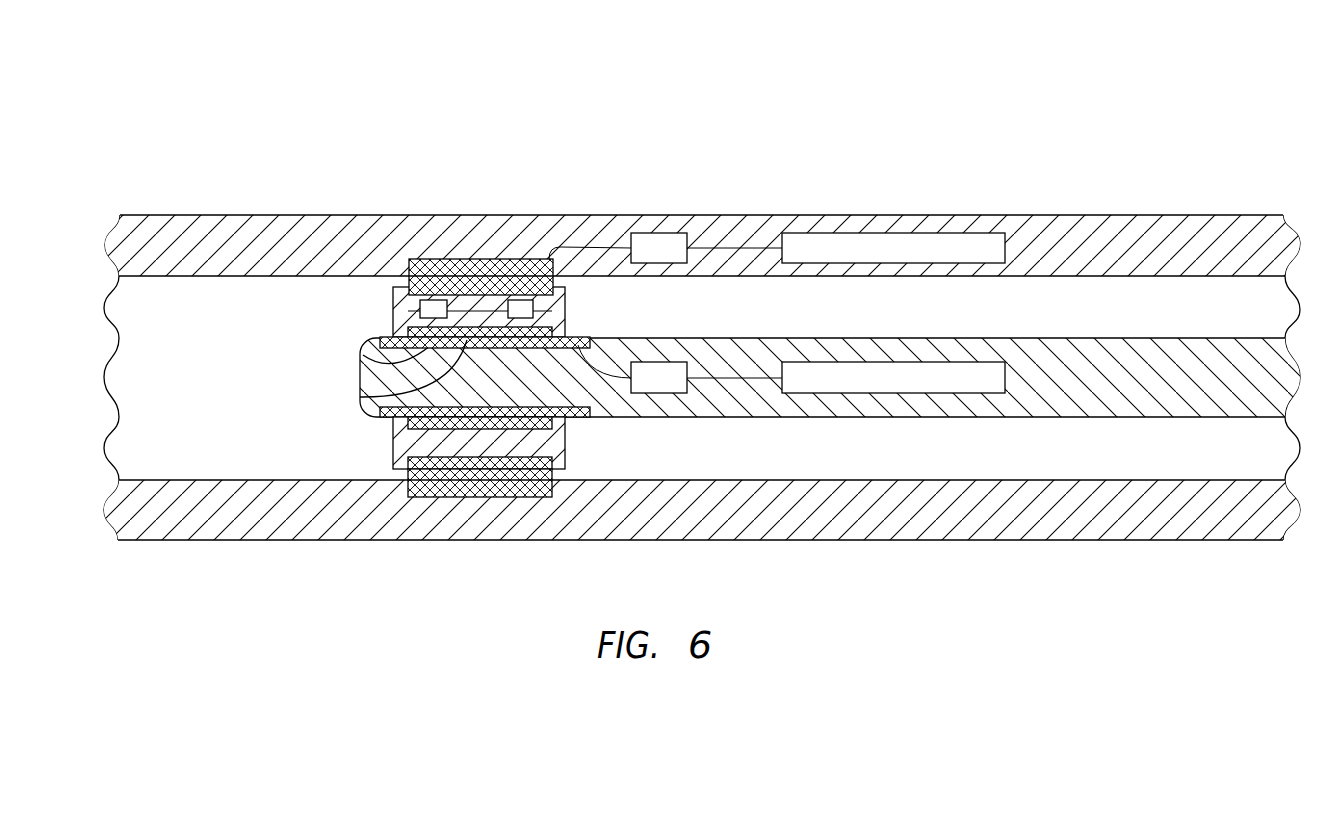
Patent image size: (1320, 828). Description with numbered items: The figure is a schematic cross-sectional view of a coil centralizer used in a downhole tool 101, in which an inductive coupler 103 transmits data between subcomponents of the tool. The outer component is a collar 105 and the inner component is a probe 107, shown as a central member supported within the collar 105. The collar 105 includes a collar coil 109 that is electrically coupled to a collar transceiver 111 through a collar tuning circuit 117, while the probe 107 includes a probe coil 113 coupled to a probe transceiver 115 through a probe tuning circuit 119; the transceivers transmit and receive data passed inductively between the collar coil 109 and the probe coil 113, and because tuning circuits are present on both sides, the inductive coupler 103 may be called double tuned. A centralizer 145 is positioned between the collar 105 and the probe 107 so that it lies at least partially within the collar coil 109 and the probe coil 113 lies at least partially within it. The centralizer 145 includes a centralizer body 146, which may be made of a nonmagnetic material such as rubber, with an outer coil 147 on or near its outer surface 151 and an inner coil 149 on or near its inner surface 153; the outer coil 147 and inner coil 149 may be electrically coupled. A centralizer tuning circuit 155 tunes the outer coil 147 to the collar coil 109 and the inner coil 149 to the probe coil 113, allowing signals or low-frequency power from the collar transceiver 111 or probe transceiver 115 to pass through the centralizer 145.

The downhole tool 101 is at (216, 130).
The inductive coupler 103 is at (433, 372).
The collar 105 is at (1017, 216).
The probe 107 is at (1095, 338).
The collar coil 109 is at (436, 259).
The collar transceiver 111 is at (800, 233).
The probe coil 113 is at (363, 355).
The probe transceiver 115 is at (862, 393).
The collar tuning circuit 117 is at (643, 233).
The probe tuning circuit 119 is at (662, 393).
The centralizer 145 is at (442, 238).
The centralizer body 146 is at (393, 458).
The outer coil 147 is at (490, 287).
The inner coil 149 is at (360, 373).
The outer surface 151 is at (560, 298).
The inner surface 153 is at (360, 397).
The centralizer tuning circuit 155 is at (432, 365).